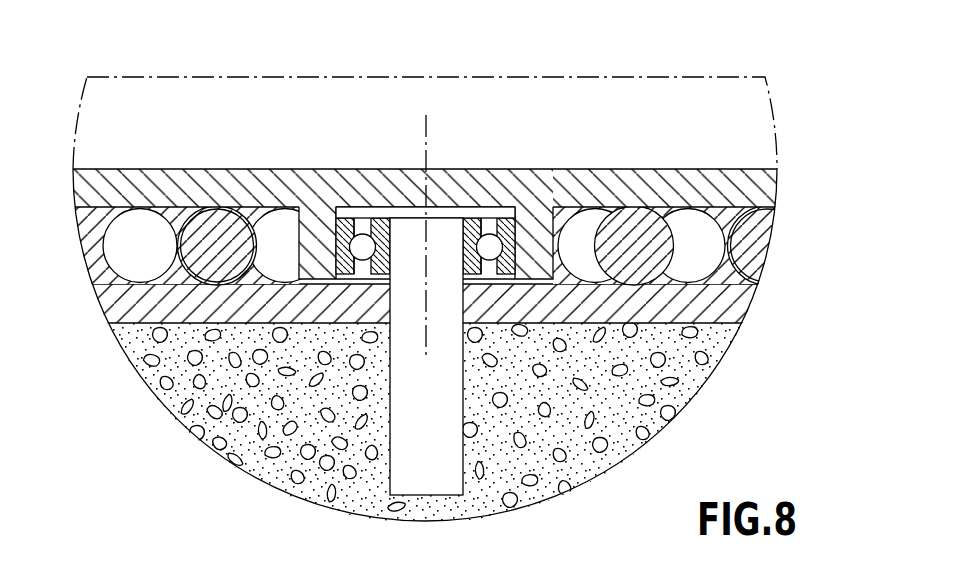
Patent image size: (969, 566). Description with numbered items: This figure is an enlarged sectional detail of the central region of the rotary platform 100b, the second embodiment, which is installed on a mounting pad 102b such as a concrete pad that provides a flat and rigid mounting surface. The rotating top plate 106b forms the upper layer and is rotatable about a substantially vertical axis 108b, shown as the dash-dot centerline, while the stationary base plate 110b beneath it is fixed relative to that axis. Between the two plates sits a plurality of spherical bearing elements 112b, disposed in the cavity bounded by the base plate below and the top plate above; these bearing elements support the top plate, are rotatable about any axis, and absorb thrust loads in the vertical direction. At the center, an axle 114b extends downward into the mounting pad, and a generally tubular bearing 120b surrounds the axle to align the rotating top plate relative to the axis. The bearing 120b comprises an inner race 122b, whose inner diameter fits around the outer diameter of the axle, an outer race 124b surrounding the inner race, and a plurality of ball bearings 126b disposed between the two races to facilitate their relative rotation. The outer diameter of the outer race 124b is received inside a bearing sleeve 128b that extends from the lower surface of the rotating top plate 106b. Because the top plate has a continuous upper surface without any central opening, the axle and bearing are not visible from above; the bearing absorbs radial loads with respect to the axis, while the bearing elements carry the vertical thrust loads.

The rotary platform 100b is at (724, 43).
The mounting pad 102b is at (675, 403).
The rotating top plate 106b is at (165, 183).
The axis 108b is at (425, 289).
The stationary base plate 110b is at (140, 303).
The bearing elements 112b is at (752, 247).
The axle 114b is at (408, 228).
The bearing 120b is at (470, 210).
The inner race 122b is at (375, 230).
The outer race 124b is at (343, 235).
The ball bearings 126b is at (495, 247).
The bearing sleeve 128b is at (530, 247).